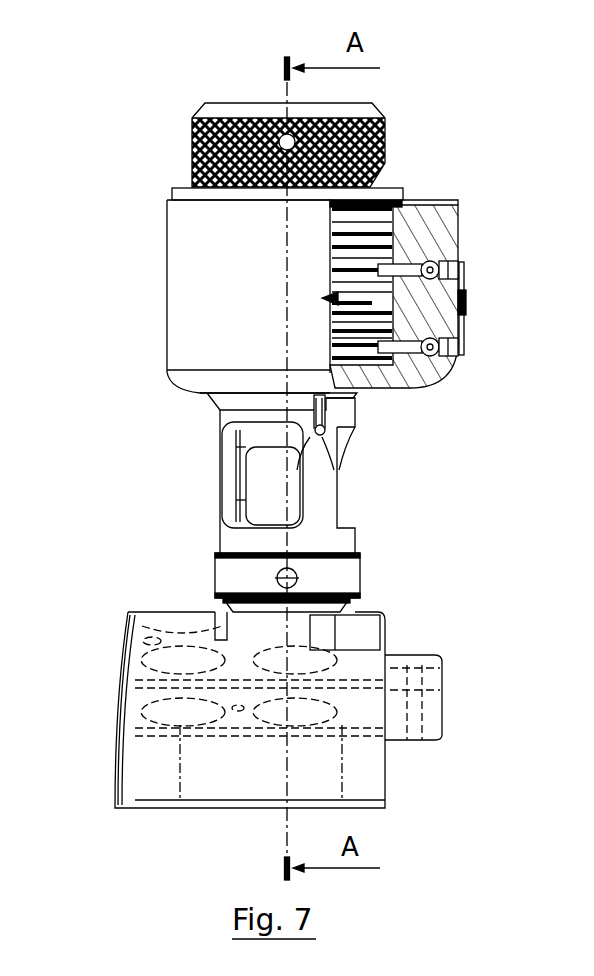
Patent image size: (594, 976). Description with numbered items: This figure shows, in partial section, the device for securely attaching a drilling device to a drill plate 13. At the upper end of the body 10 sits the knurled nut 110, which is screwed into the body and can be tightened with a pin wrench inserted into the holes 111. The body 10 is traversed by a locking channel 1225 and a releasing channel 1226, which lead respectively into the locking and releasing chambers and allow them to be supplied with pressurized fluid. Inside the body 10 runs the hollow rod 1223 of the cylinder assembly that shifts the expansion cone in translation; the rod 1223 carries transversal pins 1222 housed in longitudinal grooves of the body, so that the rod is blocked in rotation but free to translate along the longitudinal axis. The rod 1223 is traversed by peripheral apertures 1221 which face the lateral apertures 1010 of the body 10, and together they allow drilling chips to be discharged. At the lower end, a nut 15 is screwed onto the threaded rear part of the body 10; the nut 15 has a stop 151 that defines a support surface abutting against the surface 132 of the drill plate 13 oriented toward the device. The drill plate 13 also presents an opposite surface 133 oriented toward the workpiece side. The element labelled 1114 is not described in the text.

The body 10 is at (225, 352).
The knurled nut 110 is at (190, 162).
The holes 111 is at (190, 138).
The releasing channel 1226 is at (407, 272).
The locking channel 1225 is at (418, 350).
The hollow rod 1223 is at (222, 433).
The apertures 1010 is at (228, 462).
The peripheral apertures 1221 is at (232, 495).
The pin 1114 is at (335, 432).
The transversal pins 1222 is at (340, 470).
The nut 15 is at (345, 575).
The stop 151 is at (237, 591).
The opposite surface 133 is at (375, 607).
The drill plate 13 is at (360, 703).
The surface 132 is at (360, 778).